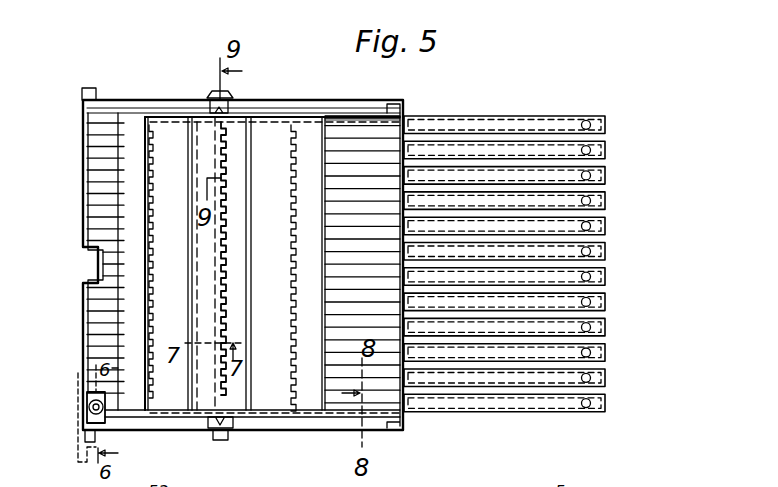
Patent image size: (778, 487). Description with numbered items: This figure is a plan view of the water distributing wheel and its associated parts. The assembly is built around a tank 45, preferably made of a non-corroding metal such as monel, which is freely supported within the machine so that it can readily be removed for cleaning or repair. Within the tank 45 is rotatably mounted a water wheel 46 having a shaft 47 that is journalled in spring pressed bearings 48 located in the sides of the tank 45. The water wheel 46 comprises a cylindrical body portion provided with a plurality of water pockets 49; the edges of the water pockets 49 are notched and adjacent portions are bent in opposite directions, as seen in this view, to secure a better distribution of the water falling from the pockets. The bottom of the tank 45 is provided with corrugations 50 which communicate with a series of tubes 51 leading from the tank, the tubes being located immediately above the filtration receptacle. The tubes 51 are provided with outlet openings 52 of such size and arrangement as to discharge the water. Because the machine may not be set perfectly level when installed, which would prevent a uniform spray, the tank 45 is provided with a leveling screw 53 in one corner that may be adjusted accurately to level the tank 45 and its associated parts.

The tank 45 is at (310, 430).
The water wheel 46 is at (265, 417).
The shaft 47 is at (218, 304).
The spring pressed bearings 48 is at (245, 460).
The water pockets 49 is at (150, 219).
The corrugations 50 is at (357, 152).
The tubes 51 is at (607, 302).
The outlet openings 52 is at (607, 403).
The leveling screw 53 is at (87, 410).